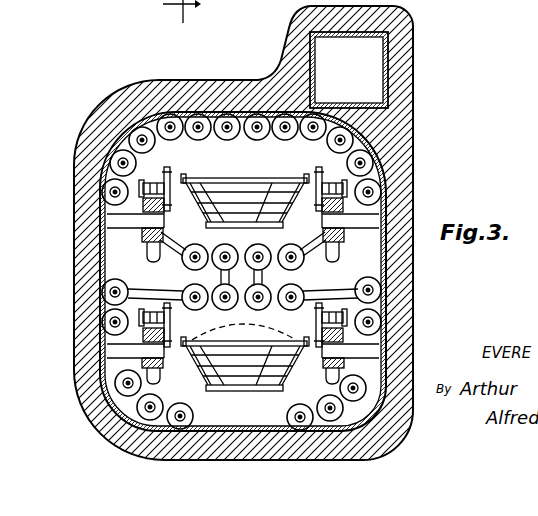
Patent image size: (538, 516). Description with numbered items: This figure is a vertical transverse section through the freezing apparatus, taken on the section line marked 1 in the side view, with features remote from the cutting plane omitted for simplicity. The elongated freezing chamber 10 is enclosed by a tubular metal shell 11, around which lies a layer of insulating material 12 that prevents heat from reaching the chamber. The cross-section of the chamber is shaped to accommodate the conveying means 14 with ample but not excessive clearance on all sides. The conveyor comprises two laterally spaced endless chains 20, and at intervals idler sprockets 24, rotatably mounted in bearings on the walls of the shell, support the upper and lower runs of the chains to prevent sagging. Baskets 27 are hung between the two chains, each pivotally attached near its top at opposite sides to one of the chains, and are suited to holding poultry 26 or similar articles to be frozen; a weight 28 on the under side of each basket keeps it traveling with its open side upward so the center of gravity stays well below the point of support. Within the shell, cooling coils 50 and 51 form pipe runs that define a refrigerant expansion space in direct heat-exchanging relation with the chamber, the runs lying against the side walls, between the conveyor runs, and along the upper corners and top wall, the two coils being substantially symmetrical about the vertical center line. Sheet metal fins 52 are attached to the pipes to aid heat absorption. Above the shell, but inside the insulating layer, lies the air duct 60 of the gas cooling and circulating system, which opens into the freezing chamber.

The section line indicator 1 is at (188, 11).
The freezing chamber 10 is at (220, 80).
The metal shell 11 is at (112, 160).
The insulating material 12 is at (140, 100).
The conveying means 14 is at (287, 174).
The endless chains 20 is at (167, 196).
The idler sprockets 24 is at (148, 247).
The poultry 26 is at (215, 330).
The baskets 27 is at (278, 181).
The weight 28 is at (263, 223).
The cooling coil 50 is at (117, 279).
The cooling coil 51 is at (366, 276).
The sheet metal fins 52 is at (227, 138).
The air duct 60 is at (349, 70).